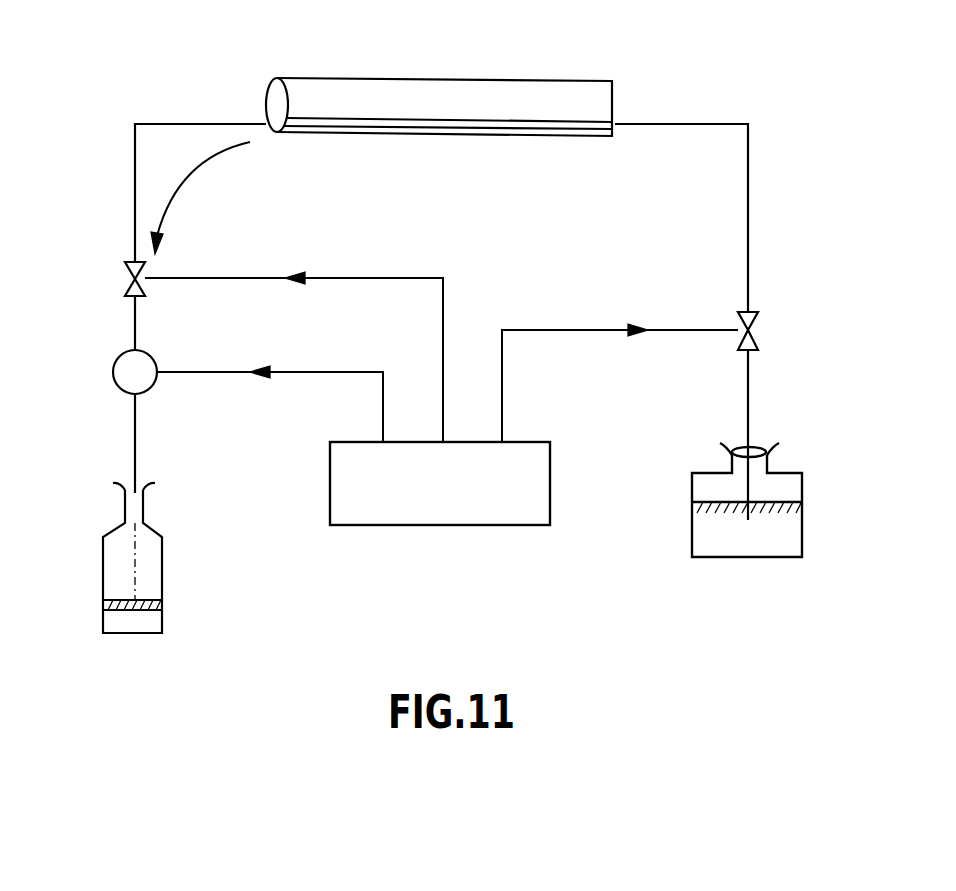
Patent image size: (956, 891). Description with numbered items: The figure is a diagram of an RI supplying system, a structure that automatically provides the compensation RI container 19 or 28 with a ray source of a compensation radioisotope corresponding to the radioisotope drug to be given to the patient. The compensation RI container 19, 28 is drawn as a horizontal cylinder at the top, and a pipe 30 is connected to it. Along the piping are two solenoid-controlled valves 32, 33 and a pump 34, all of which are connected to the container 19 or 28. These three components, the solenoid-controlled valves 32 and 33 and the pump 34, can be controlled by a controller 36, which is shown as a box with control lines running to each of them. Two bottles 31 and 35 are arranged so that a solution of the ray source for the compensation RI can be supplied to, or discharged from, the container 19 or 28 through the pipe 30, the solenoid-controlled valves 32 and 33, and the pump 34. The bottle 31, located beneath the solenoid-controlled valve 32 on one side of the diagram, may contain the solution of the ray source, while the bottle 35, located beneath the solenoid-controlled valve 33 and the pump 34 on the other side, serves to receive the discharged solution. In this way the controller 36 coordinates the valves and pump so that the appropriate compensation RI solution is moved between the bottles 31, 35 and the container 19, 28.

The compensation RI container 19 is at (496, 80).
The compensation RI container 28 is at (496, 80).
The pipe 30 is at (752, 232).
The bottle 31 is at (743, 547).
The solenoid-controlled valve 32 is at (758, 335).
The solenoid-controlled valve 33 is at (124, 292).
The pump 34 is at (147, 395).
The bottle 35 is at (160, 573).
The controller 36 is at (535, 441).